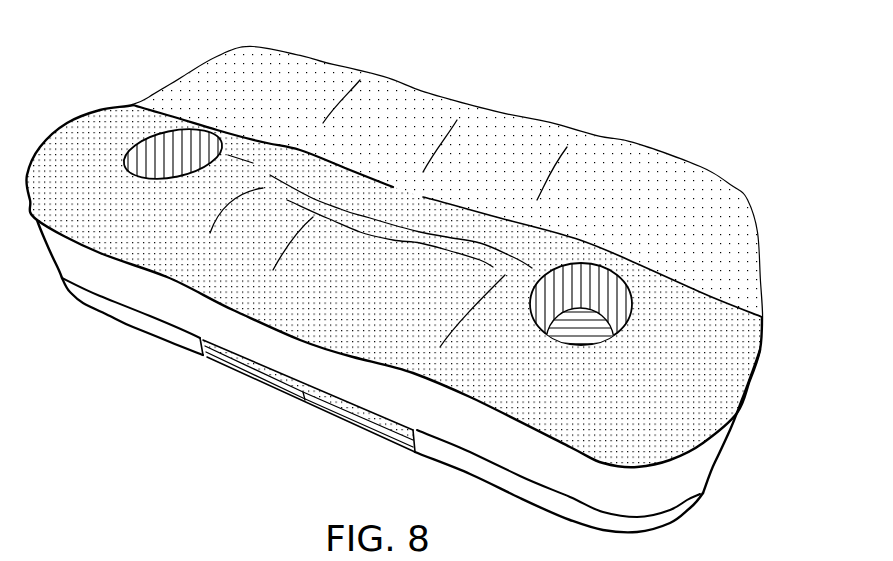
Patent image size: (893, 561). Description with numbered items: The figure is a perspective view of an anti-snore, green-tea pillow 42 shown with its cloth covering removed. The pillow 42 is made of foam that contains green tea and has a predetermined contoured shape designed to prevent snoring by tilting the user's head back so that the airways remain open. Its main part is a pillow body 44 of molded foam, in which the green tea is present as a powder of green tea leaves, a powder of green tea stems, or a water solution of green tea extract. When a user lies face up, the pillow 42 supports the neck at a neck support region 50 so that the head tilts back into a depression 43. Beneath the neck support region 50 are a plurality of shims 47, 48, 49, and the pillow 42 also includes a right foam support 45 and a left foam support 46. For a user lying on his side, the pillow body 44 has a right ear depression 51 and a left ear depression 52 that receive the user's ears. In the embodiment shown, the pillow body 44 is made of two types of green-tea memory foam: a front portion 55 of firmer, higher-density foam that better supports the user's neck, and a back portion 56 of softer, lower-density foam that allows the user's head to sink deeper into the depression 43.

The anti-snore green-tea pillow 42 is at (409, 273).
The depression 43 is at (418, 198).
The pillow body 44 is at (409, 273).
The right foam support 45 is at (458, 470).
The left foam support 46 is at (140, 332).
The shim 47 is at (300, 396).
The shim 48 is at (393, 430).
The shim 49 is at (357, 423).
The neck support region 50 is at (380, 263).
The right ear depression 51 is at (175, 168).
The left ear depression 52 is at (593, 330).
The front portion 55 is at (777, 325).
The back portion 56 is at (765, 210).